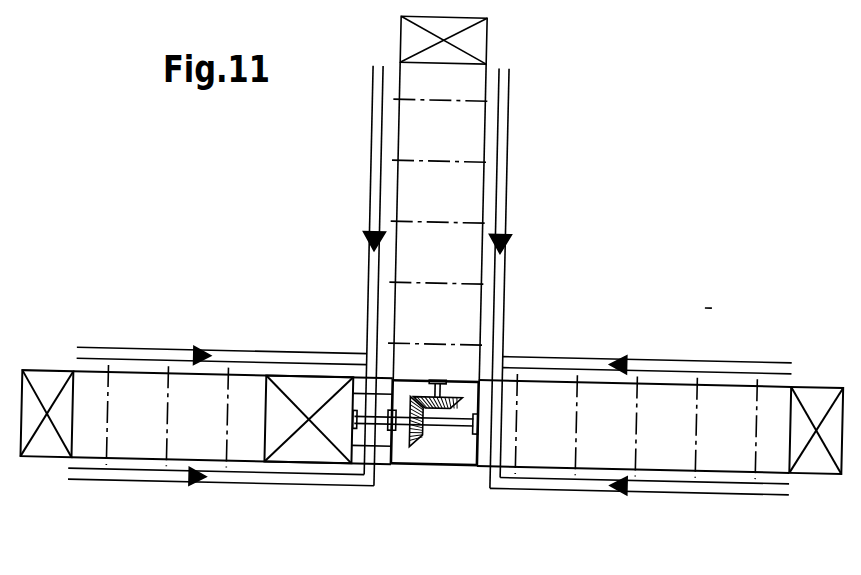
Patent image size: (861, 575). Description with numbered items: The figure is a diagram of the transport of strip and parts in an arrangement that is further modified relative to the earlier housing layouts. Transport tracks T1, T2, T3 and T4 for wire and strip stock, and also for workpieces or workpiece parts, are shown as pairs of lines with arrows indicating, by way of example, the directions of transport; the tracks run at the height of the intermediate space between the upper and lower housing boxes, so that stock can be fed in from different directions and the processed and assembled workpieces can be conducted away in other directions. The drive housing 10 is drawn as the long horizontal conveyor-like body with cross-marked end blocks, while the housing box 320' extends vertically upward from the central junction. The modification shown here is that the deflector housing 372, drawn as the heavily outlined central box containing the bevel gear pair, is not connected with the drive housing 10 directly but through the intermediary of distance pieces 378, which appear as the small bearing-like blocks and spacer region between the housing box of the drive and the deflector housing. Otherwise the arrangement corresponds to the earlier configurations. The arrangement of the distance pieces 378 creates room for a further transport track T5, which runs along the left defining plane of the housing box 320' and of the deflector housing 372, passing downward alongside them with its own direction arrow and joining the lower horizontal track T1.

The housing box 320' is at (486, 200).
The deflector housing 372 is at (465, 377).
The distance pieces 378 is at (365, 392).
The drive housing 10 is at (296, 455).
The transport track T1 is at (164, 489).
The transport track T2 is at (666, 485).
The transport track T3 is at (500, 181).
The transport track T4 is at (663, 361).
The further transport track T5 is at (370, 186).